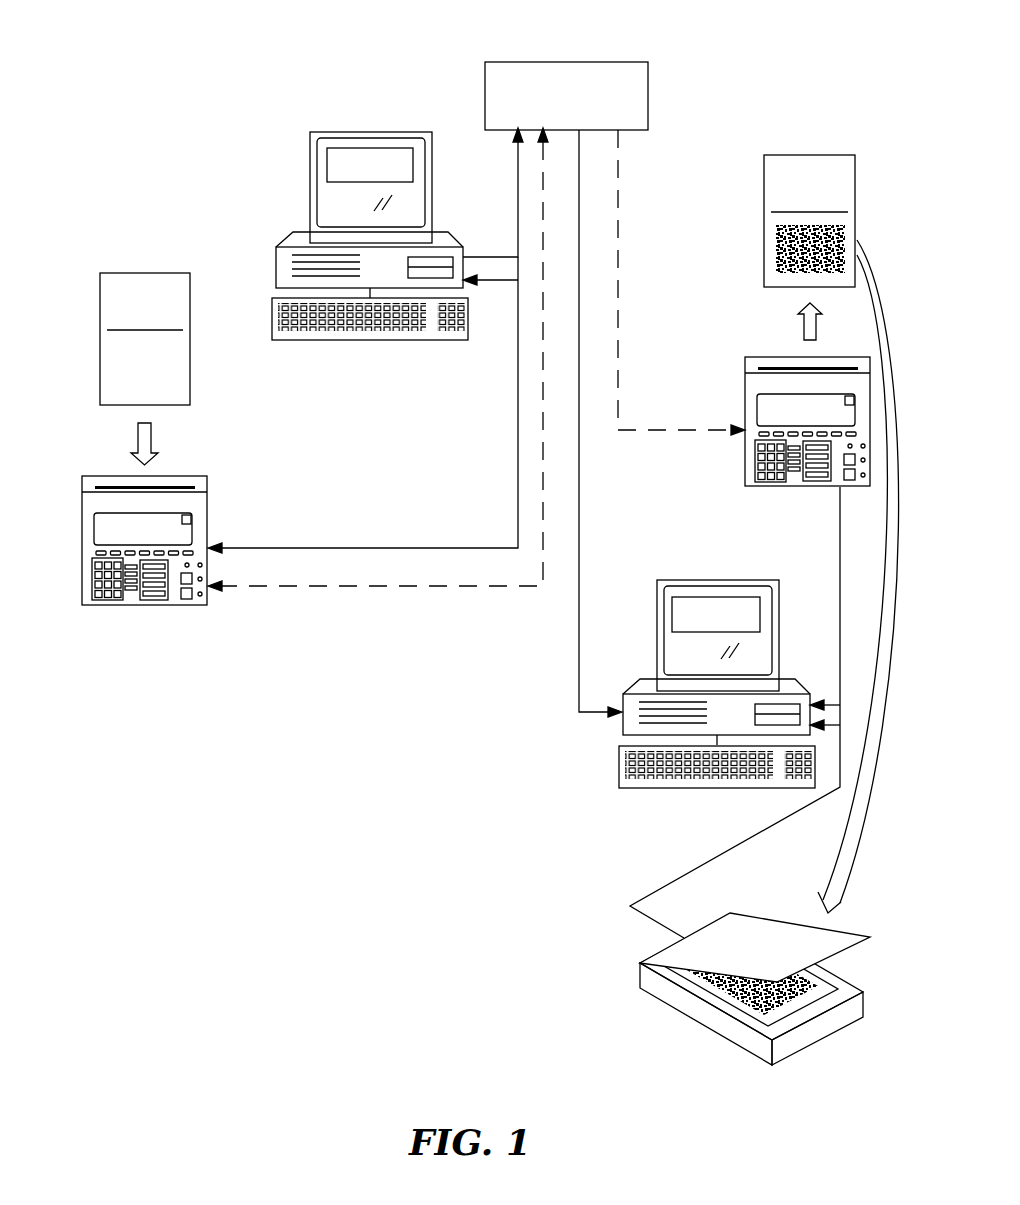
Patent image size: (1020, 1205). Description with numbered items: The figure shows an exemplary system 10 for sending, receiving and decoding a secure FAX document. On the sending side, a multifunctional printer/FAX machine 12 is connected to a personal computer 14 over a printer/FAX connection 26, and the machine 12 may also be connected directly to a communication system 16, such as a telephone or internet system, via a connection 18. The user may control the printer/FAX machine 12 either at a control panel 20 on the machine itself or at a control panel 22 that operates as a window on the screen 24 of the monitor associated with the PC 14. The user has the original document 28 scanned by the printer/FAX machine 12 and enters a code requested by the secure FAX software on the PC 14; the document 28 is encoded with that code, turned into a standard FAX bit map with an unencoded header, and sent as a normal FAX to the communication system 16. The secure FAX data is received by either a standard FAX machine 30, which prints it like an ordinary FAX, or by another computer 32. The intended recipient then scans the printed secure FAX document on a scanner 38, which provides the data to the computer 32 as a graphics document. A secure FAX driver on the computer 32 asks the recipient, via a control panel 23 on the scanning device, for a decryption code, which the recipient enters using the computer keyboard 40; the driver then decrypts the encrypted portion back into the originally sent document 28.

The system 10 is at (787, 59).
The multifunctional printer/FAX machine 12 is at (195, 553).
The personal computer 14 is at (340, 210).
The communication system 16 is at (575, 72).
The connection 18 is at (336, 588).
The control panel 20 is at (103, 601).
The control panel 22 is at (347, 149).
The control panel 23 is at (720, 600).
The display screen 24 is at (408, 199).
The printer/FAX connection 26 is at (388, 547).
The document 28 is at (103, 343).
The standard FAX machine 30 is at (773, 497).
The computer 32 is at (636, 698).
The scanner 38 is at (698, 1013).
The keyboard 40 is at (636, 788).